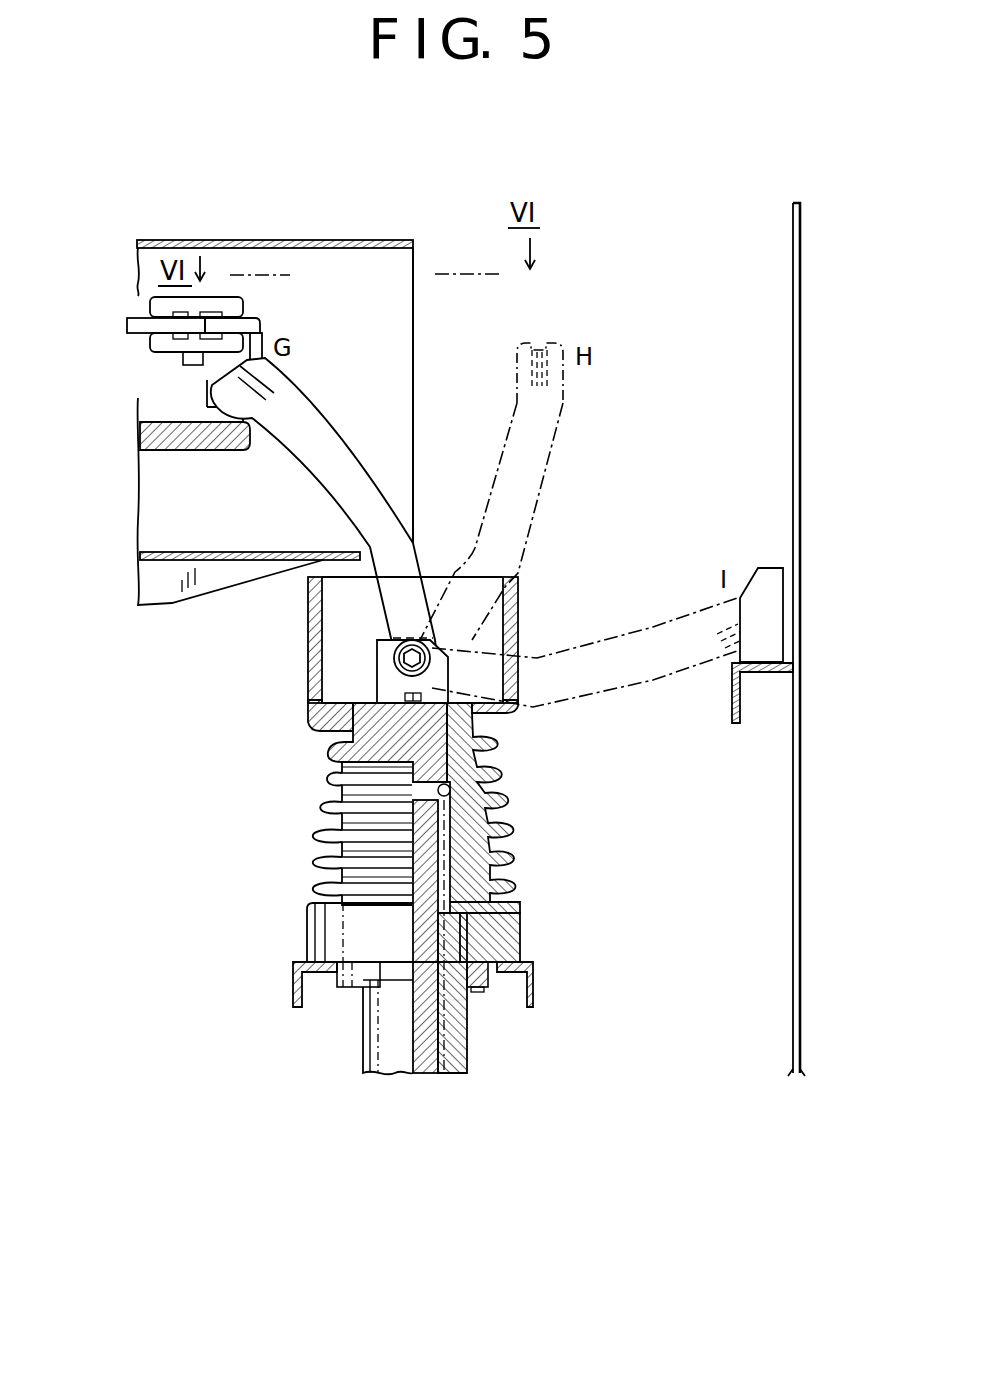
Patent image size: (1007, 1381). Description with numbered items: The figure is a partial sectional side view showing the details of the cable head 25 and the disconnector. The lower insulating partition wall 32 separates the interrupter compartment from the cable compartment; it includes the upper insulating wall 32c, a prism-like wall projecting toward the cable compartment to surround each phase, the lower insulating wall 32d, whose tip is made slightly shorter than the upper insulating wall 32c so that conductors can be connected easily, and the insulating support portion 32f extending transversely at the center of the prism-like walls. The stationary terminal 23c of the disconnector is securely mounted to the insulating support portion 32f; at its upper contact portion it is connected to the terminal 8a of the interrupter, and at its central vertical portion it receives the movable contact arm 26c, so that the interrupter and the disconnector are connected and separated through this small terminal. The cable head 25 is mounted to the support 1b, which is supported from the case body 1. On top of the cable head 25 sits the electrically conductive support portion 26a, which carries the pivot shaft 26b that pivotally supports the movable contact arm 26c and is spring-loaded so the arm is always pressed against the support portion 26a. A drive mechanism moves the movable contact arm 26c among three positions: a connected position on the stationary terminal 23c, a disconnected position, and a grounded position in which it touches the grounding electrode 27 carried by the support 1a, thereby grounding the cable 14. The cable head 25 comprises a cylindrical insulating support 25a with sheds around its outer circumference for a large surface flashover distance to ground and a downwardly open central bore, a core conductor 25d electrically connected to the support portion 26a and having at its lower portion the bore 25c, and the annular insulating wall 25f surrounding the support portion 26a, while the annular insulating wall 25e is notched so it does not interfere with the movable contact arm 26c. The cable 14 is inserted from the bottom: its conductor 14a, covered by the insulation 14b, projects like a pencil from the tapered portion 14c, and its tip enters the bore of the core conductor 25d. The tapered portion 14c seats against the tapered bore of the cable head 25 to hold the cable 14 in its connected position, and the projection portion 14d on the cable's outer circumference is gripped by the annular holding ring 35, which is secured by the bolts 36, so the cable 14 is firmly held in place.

The case body 1 is at (800, 410).
The support 1a is at (732, 698).
The support 1b is at (533, 1005).
The terminal of interrupter 8a is at (170, 357).
The cable 14 is at (452, 1076).
The conductor 14a is at (520, 900).
The insulation 14b is at (468, 1055).
The tapered portion 14c is at (521, 940).
The projection portion 14d is at (531, 962).
The stationary terminal 23c is at (258, 318).
The cable head 25 is at (313, 908).
The cylindrical insulating support 25a is at (516, 862).
The bore 25c is at (506, 778).
The core conductor 25d is at (503, 755).
The annular insulating wall 25e is at (520, 623).
The annular insulating wall 25f is at (513, 833).
The support portion 26a is at (332, 728).
The pivot shaft 26b is at (377, 665).
The movable contact arm 26c is at (372, 607).
The grounding electrode 27 is at (768, 590).
The lower insulating partition wall 32 is at (302, 240).
The upper insulating wall 32c is at (363, 238).
The lower insulating wall 32d is at (414, 323).
The insulating support portion 32f is at (170, 455).
The annular holding ring 35 is at (490, 985).
The bolts 36 is at (470, 1040).